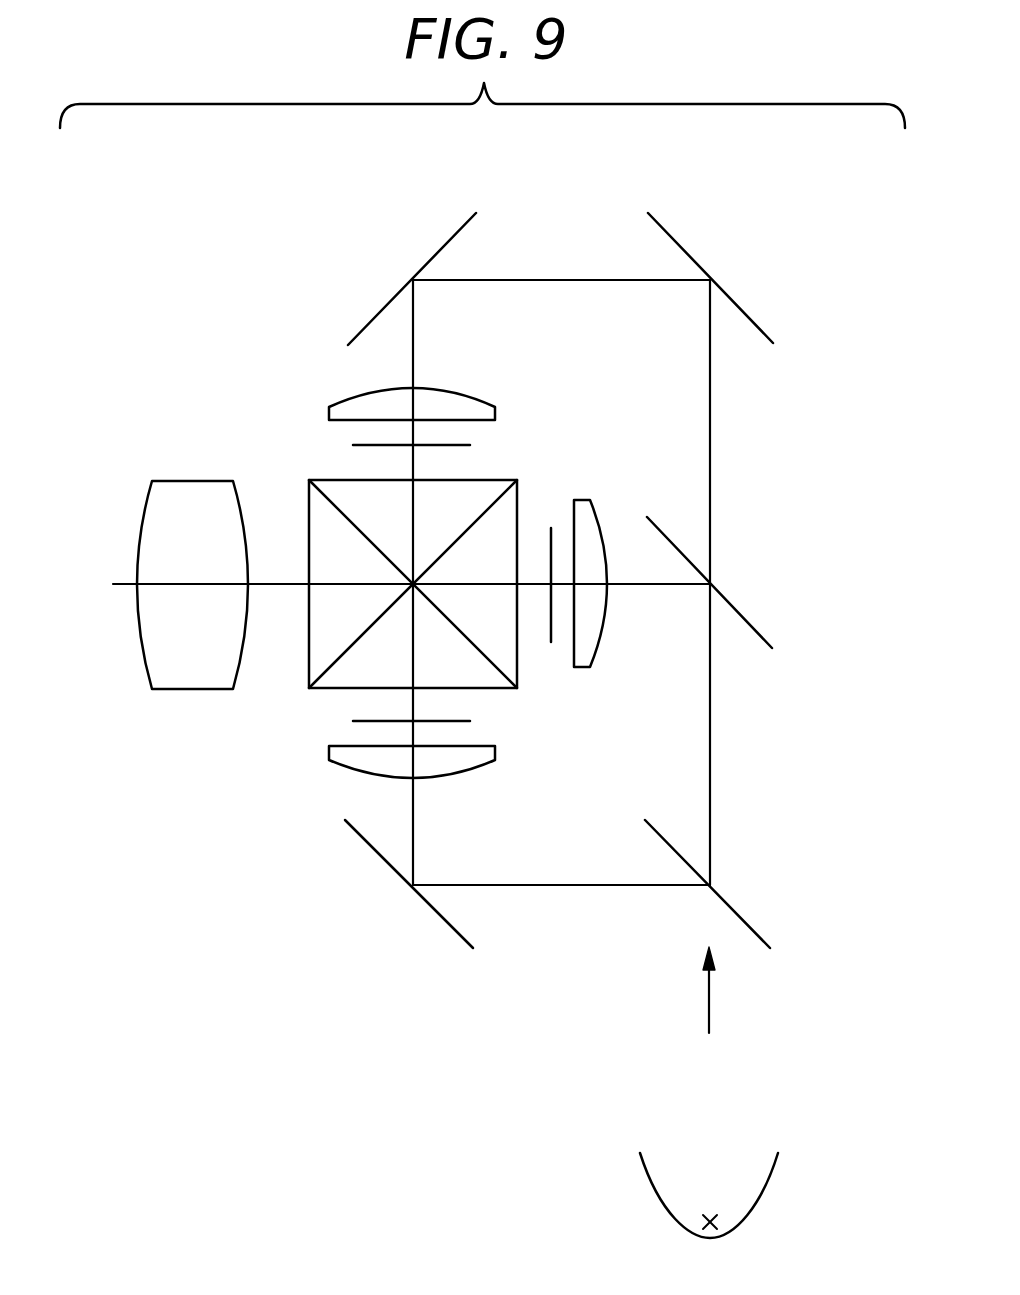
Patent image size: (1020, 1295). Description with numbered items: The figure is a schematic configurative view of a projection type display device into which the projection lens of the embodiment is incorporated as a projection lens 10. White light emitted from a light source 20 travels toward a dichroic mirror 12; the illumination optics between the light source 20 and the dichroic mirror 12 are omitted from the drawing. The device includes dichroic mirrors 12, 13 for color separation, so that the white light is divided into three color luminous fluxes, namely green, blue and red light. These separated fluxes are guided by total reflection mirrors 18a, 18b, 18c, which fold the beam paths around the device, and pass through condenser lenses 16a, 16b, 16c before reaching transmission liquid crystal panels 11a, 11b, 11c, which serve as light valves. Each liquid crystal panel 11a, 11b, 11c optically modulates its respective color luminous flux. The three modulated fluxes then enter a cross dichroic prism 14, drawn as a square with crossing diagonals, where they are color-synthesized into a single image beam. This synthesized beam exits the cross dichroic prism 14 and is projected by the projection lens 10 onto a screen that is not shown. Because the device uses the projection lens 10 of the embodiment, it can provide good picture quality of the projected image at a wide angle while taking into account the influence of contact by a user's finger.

The projection lens 10 is at (188, 680).
The cross dichroic prism 14 is at (318, 652).
The condenser lens 16a is at (463, 763).
The condenser lens 16b is at (598, 657).
The condenser lens 16c is at (473, 398).
The transmission liquid crystal panel 11a is at (466, 721).
The transmission liquid crystal panel 11b is at (552, 538).
The transmission liquid crystal panel 11c is at (358, 446).
The total reflection mirror 18a is at (437, 917).
The total reflection mirror 18b is at (750, 315).
The total reflection mirror 18c is at (353, 333).
The dichroic mirror 13 is at (753, 625).
The dichroic mirror 12 is at (752, 923).
The light source 20 is at (805, 1183).